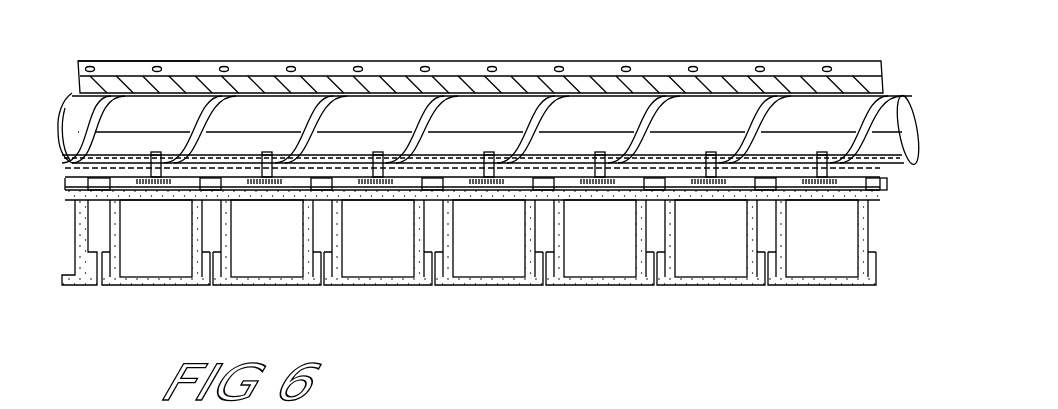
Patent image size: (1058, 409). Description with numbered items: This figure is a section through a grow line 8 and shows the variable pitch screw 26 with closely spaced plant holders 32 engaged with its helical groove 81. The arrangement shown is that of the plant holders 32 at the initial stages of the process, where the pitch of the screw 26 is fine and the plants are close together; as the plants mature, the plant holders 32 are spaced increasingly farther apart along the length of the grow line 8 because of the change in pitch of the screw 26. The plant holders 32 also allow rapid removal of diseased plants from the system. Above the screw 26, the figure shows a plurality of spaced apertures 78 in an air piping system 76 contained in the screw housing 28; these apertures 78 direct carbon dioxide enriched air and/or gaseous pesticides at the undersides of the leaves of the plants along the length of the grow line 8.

The grow line 8 is at (50, 136).
The variable pitch screw 26 is at (166, 102).
The screw housing 28 is at (884, 80).
The plant holders 32 is at (176, 292).
The air piping system 76 is at (78, 63).
The spaced apertures 78 is at (488, 64).
The helical groove 81 is at (428, 117).